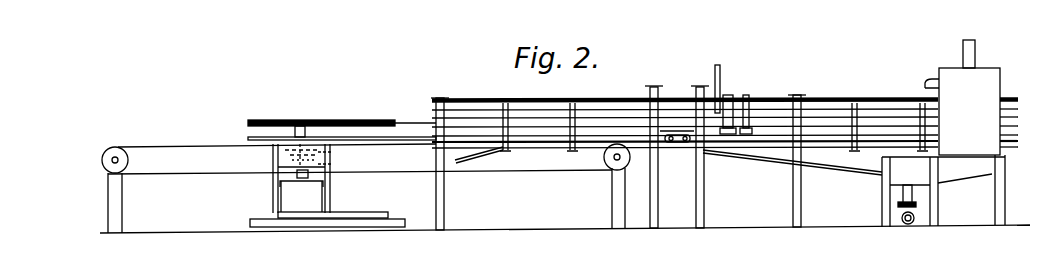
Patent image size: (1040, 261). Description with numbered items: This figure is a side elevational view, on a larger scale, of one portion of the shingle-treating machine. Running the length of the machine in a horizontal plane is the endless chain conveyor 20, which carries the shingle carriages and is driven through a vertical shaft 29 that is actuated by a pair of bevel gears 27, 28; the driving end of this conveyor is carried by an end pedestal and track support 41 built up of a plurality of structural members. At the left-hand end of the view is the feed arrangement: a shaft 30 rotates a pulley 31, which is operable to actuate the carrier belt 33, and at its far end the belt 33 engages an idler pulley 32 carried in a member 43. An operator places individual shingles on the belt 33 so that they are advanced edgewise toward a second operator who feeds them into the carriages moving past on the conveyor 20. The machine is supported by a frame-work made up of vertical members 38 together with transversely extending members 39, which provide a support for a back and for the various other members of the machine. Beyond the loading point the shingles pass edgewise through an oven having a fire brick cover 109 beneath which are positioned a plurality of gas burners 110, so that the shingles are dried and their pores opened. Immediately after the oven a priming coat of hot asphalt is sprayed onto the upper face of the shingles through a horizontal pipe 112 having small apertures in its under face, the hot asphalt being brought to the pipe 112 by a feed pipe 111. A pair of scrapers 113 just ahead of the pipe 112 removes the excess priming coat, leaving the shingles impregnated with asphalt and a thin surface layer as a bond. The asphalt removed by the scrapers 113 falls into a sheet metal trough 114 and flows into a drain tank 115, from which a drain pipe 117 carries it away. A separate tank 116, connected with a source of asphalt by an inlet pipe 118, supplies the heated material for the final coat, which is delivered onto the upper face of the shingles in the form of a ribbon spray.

The endless chain conveyor 20 is at (350, 117).
The bevel gear 27 is at (331, 165).
The bevel gear 28 is at (331, 153).
The vertical shaft 29 is at (273, 153).
The shaft 30 is at (609, 170).
The pulley 31 is at (604, 158).
The idler pulley 32 is at (121, 170).
The carrier belt 33 is at (185, 174).
The vertical members 38 is at (444, 201).
The transversely extending members 39 is at (440, 97).
The end pedestal and track support 41 is at (324, 206).
The member 43 is at (120, 223).
The fire brick cover 109 is at (673, 130).
The gas burners 110 is at (688, 143).
The feed pipe 111 is at (720, 69).
The horizontal pipe 112 is at (731, 95).
The scrapers 113 is at (749, 95).
The sheet metal trough 114 is at (852, 173).
The drain tank 115 is at (987, 181).
The tank 116 is at (998, 73).
The drain pipe 117 is at (902, 227).
The inlet pipe 118 is at (975, 52).